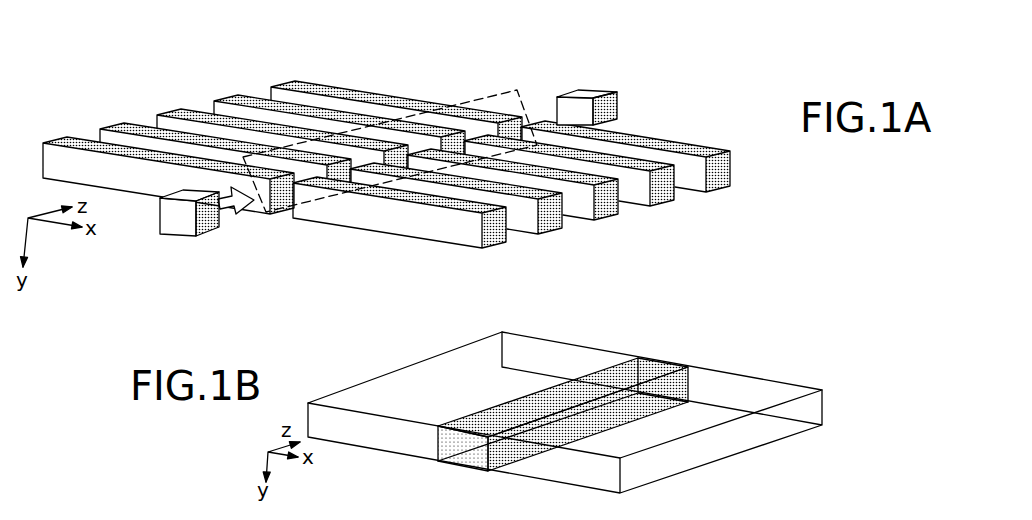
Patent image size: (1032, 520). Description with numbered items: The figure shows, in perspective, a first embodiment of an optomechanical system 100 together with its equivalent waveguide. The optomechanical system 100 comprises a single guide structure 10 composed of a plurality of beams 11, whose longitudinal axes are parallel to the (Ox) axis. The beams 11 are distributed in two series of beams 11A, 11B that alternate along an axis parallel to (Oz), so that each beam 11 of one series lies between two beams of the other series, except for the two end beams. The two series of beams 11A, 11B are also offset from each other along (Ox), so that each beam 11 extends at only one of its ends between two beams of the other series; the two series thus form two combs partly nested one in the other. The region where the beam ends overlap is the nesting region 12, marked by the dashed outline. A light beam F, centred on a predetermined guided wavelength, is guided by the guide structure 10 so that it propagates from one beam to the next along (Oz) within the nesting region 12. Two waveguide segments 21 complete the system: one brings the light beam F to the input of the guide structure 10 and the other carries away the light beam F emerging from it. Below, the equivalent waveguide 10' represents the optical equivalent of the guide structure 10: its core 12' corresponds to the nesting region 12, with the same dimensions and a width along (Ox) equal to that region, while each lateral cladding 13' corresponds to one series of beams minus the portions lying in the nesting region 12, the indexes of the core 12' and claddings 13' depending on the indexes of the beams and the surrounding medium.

In FIG. 1A, the optomechanical system 100 is at (209, 63).
In FIG. 1A, the guide structure 10 is at (388, 144).
In FIG. 1A, the first series of beams 11A is at (270, 81).
In FIG. 1A, the second series of beams 11B is at (728, 194).
In FIG. 1A, the beam 11 is at (328, 106).
In FIG. 1A, the nesting region 12 is at (390, 125).
In FIG. 1A, the waveguide segment 21 is at (582, 108).
In FIG. 1A, the light beam F is at (237, 210).
In FIG. 1B, the equivalent waveguide 10' is at (565, 377).
In FIG. 1B, the lateral cladding 13' is at (565, 391).
In FIG. 1B, the core 12' is at (570, 387).